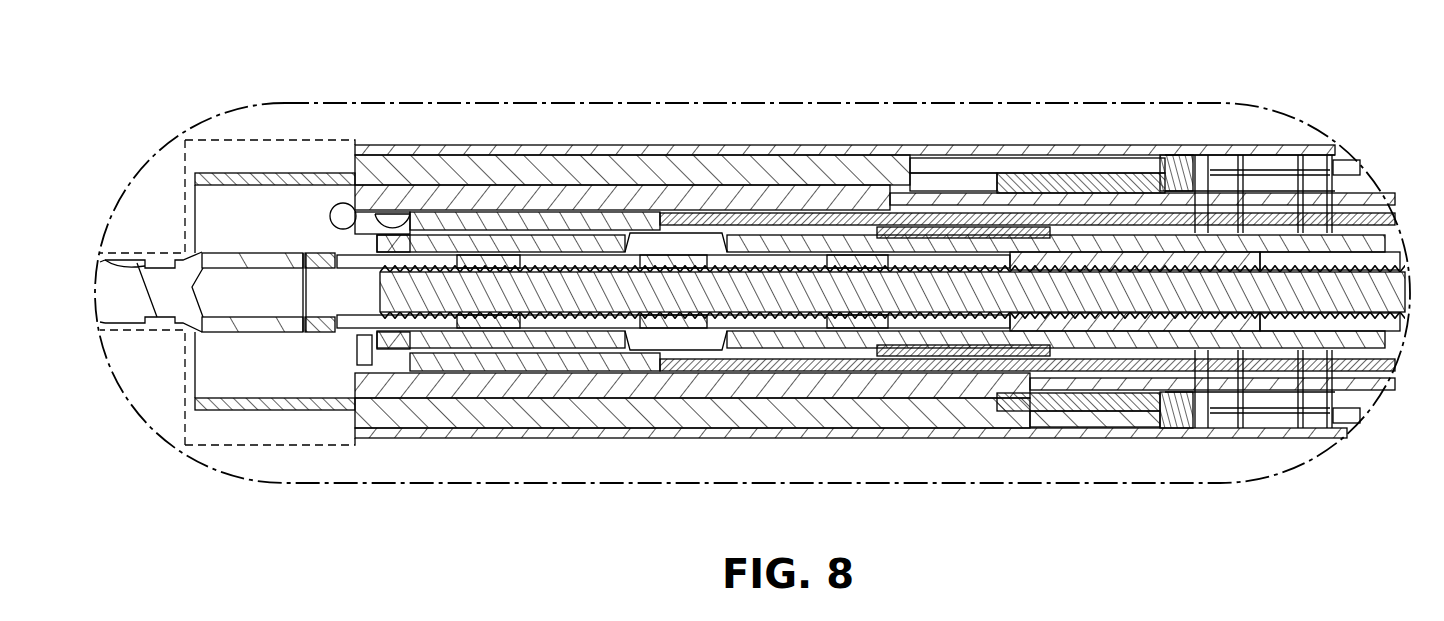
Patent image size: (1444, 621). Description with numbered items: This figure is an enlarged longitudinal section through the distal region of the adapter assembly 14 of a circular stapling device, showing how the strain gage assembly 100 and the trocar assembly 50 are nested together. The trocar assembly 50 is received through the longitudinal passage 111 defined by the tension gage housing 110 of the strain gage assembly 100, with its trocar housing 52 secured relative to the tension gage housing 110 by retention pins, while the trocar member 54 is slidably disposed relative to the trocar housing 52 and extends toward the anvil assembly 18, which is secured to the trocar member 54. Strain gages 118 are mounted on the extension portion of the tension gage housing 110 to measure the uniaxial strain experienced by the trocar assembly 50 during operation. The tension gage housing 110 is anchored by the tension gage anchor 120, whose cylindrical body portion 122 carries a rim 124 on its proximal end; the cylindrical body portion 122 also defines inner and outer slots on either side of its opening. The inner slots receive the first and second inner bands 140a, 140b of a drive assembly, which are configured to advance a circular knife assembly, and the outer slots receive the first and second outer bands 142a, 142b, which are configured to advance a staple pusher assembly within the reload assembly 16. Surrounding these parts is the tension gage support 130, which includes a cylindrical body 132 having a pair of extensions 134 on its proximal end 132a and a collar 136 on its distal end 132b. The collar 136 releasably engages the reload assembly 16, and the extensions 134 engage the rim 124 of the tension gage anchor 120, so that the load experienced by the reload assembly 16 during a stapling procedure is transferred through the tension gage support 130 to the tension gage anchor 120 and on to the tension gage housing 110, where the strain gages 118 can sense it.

The adapter assembly 14 is at (1306, 66).
The reload assembly 16 is at (258, 140).
The anvil assembly 18 is at (173, 8).
The trocar assembly 50 is at (1135, 352).
The trocar housing 52 is at (497, 265).
The trocar member 54 is at (232, 327).
The strain gage assembly 100 is at (880, 467).
The tension gage housing 110 is at (910, 227).
The longitudinal passage 111 is at (947, 238).
The strain gages 118 is at (982, 230).
The tension gage anchor 120 is at (1083, 165).
The cylindrical body portion 122 is at (1132, 178).
The rim 124 is at (1180, 440).
The tension gage support 130 is at (508, 440).
The cylindrical body 132 is at (651, 165).
The proximal end 132a is at (807, 433).
The distal end 132b is at (453, 415).
The extensions 134 is at (1117, 160).
The collar 136 is at (267, 410).
The first inner band 140a is at (780, 212).
The second inner band 140b is at (717, 365).
The first outer band 142a is at (957, 200).
The second outer band 142b is at (933, 390).